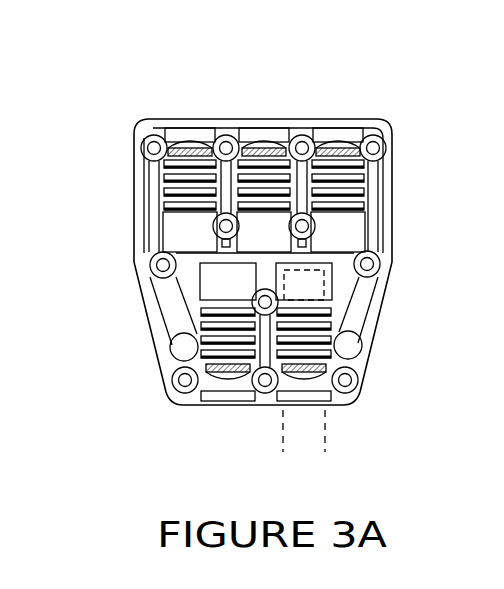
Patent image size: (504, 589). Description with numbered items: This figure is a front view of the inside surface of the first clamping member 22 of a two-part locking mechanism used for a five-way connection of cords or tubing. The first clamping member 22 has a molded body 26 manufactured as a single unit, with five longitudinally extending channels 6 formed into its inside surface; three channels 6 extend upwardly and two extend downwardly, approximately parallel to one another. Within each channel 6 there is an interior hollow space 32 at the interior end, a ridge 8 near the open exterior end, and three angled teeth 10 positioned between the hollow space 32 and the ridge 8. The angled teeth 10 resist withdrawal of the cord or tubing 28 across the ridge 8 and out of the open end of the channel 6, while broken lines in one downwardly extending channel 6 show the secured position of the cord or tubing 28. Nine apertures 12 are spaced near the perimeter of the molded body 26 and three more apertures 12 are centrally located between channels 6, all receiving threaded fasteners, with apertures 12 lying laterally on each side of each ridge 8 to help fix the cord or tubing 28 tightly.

The channels 6 is at (262, 248).
The ridge 8 is at (187, 150).
The angled teeth 10 is at (175, 197).
The apertures 12 is at (378, 275).
The first clamping member 22 is at (370, 88).
The molded body 26 is at (148, 302).
The cord or tubing 28 is at (327, 434).
The interior hollow space 32 is at (357, 232).